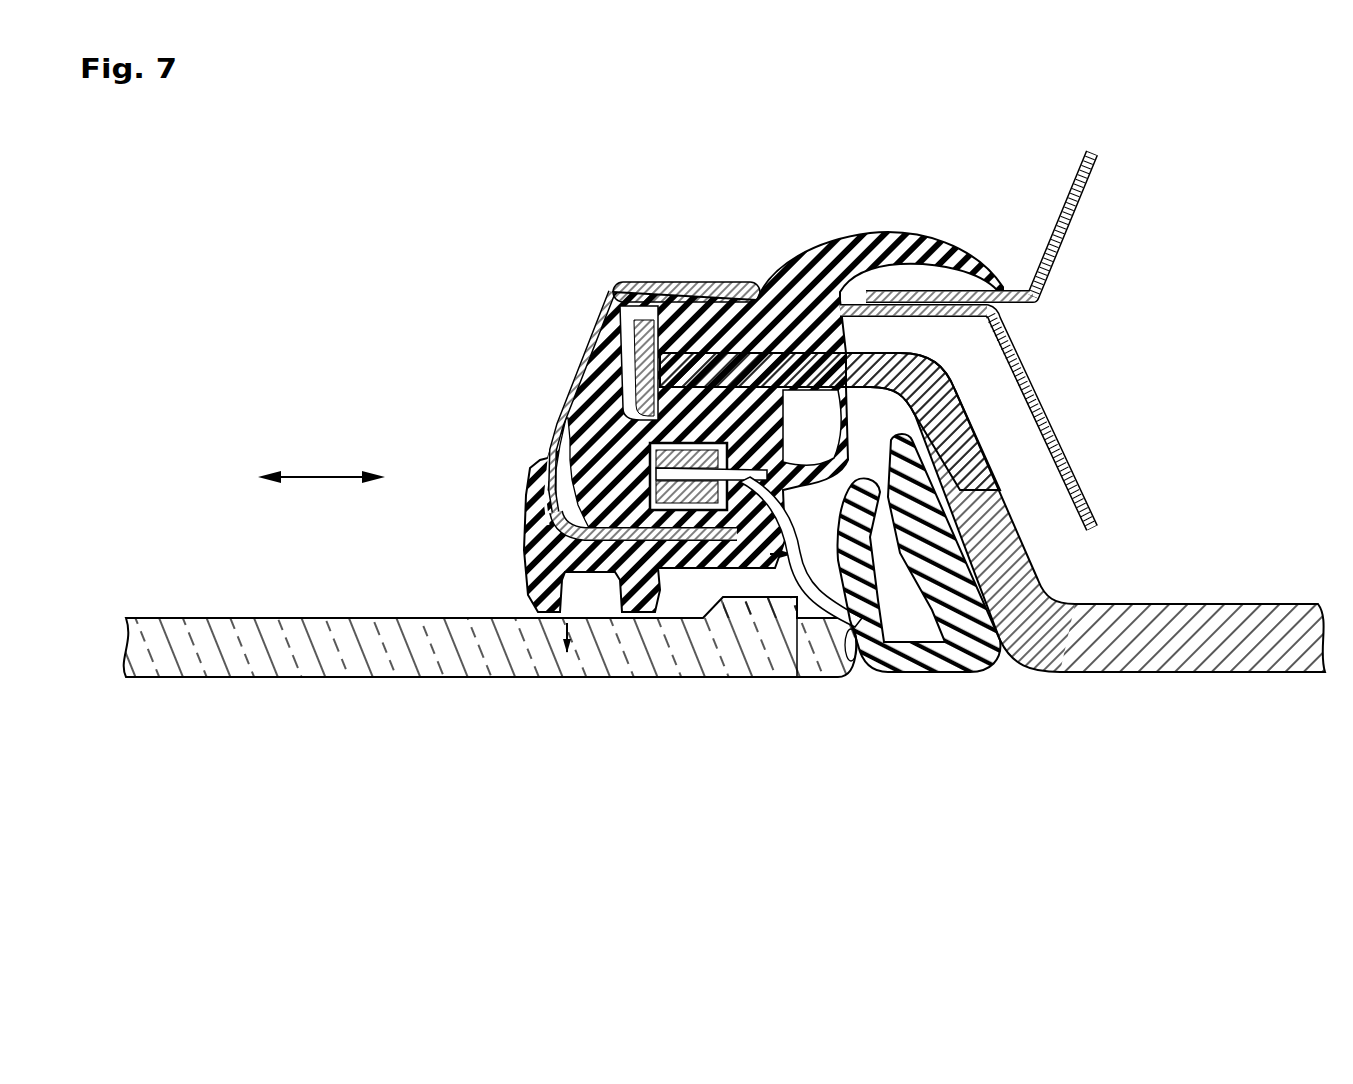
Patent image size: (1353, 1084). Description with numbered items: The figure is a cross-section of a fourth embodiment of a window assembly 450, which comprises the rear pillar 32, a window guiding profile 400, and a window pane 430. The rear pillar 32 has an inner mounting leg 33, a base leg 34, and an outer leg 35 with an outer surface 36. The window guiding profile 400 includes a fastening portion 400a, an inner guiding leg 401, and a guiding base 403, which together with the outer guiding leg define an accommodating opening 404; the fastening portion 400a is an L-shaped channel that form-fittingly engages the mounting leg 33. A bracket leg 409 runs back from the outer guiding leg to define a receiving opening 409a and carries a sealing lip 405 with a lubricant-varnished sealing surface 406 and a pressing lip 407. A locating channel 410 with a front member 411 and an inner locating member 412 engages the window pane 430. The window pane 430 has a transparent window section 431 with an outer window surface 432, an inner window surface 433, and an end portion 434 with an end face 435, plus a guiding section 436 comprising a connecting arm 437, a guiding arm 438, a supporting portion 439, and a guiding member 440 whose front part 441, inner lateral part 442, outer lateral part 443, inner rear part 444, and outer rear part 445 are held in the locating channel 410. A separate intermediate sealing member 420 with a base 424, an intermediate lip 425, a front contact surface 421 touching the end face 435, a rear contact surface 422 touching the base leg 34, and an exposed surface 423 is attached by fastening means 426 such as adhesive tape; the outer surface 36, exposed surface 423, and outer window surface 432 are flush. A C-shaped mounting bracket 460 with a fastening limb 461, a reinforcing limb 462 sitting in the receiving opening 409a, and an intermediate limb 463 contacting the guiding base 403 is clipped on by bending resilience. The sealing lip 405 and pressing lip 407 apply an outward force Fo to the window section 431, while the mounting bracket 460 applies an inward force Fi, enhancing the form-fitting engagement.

The window assembly 450 is at (347, 200).
The window guiding profile 400 is at (812, 243).
The fastening portion 400a is at (645, 360).
The mounting bracket 460 is at (636, 280).
The fastening limb 461 is at (700, 282).
The reinforcing limb 462 is at (597, 340).
The inner mounting leg 33 is at (849, 363).
The accommodating opening 404 is at (880, 357).
The inner guiding leg 401 is at (773, 400).
The inner locating member 412 is at (783, 428).
The base 424 is at (940, 485).
The base leg 34 is at (992, 507).
The fastening means 426 is at (957, 572).
The rear pillar 32 is at (1185, 602).
The outer leg 35 is at (1260, 612).
The outer surface 36 is at (1262, 680).
The window pane 430 is at (200, 617).
The window section 431 is at (300, 646).
The inner window surface 433 is at (377, 617).
The outer window surface 432 is at (200, 678).
The sealing lip 405 is at (537, 604).
The sealing surface 406 is at (545, 620).
The pressing lip 407 is at (627, 587).
The bracket leg 409 is at (570, 559).
The receiving opening 409a is at (600, 540).
The locating channel 410 is at (650, 460).
The front member 411 is at (650, 480).
The guiding base 403 is at (590, 430).
The front part 441 is at (633, 473).
The guiding member 440 is at (662, 445).
The inner rear part 444 is at (738, 468).
The inner lateral part 442 is at (699, 375).
The guiding arm 438 is at (780, 477).
The outer rear part 445 is at (730, 490).
The guiding section 436 is at (780, 563).
The connecting arm 437 is at (822, 618).
The supporting portion 439 is at (747, 620).
The end portion 434 is at (827, 648).
The intermediate limb 463 is at (685, 580).
The outer lateral part 443 is at (665, 580).
The front contact surface 421 is at (843, 655).
The end face 435 is at (870, 625).
The intermediate lip 425 is at (895, 672).
The exposed surface 423 is at (945, 678).
The intermediate sealing member 420 is at (980, 684).
The rear contact surface 422 is at (1010, 652).
The outward directed force Fo is at (591, 644).
The inward directed force Fi is at (767, 545).